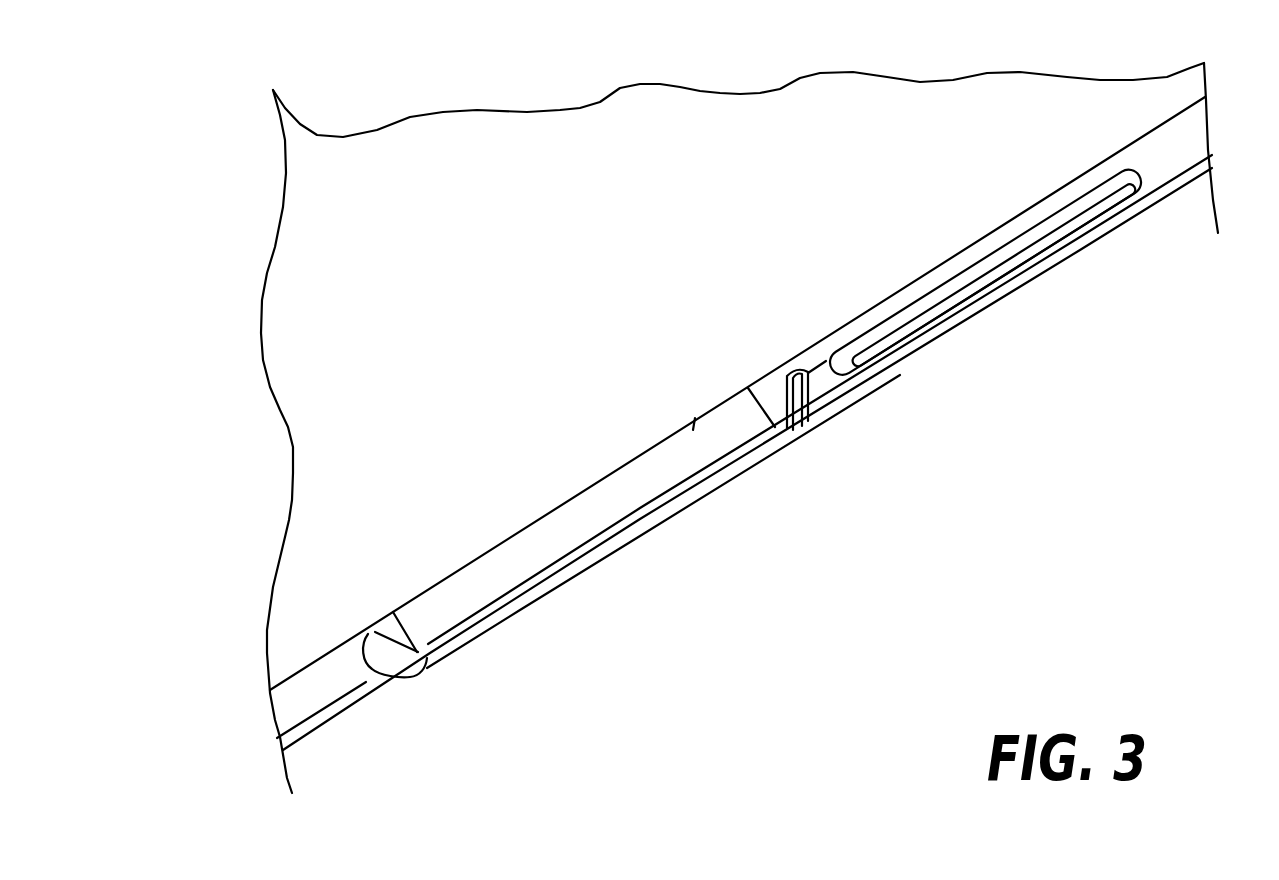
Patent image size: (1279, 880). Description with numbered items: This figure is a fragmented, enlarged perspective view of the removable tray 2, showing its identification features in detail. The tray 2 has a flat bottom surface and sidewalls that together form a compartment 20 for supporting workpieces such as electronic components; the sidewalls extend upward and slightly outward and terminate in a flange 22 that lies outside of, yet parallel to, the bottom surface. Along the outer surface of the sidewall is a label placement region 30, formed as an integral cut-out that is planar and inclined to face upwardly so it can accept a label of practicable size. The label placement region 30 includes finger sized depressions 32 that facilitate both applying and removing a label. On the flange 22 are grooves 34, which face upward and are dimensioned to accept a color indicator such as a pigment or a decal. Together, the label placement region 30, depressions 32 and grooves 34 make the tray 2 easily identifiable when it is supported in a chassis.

The tray 2 is at (313, 573).
The compartment 20 is at (893, 156).
The flange 22 is at (1167, 145).
The label placement region 30 is at (657, 480).
The finger sized depressions 32 is at (450, 574).
The grooves 34 is at (1033, 250).